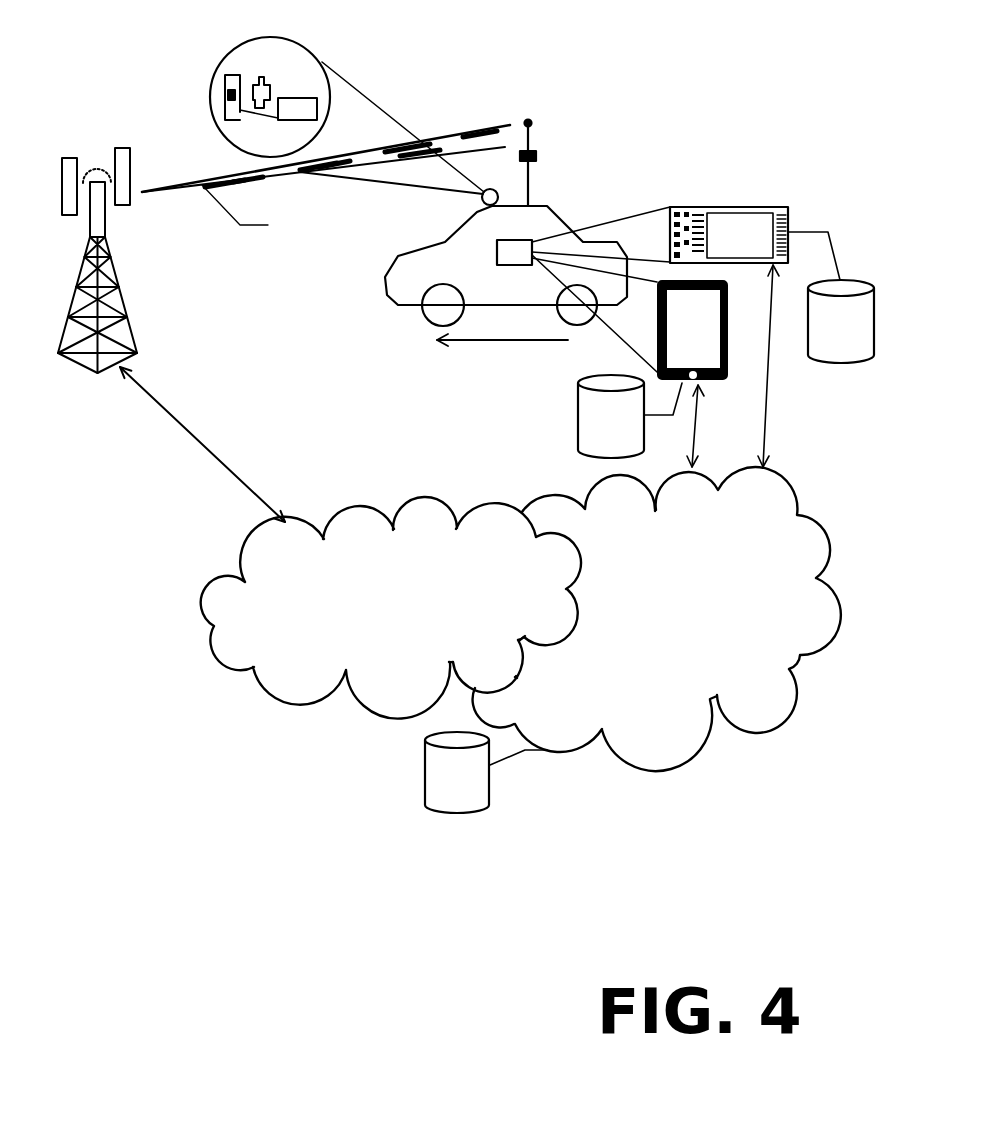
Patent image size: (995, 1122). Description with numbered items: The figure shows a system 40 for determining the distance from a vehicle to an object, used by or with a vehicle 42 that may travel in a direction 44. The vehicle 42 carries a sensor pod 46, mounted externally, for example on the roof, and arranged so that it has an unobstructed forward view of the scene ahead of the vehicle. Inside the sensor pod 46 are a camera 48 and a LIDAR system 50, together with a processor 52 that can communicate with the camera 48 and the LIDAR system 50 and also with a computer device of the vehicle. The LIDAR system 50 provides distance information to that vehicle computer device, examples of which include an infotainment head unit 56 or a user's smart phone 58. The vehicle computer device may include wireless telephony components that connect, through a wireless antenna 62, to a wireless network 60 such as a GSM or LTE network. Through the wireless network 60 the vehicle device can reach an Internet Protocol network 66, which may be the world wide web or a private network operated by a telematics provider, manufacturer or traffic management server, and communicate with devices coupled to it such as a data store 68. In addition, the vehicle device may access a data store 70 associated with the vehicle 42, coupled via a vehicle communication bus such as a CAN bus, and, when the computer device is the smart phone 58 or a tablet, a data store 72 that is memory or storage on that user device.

The system 40 is at (822, 918).
The vehicle 42 is at (469, 224).
The direction 44 is at (501, 368).
The sensor pod 46 is at (222, 134).
The camera 48 is at (261, 84).
The LIDAR system 50 is at (251, 112).
The processor 52 is at (289, 98).
The infotainment head unit 56 is at (729, 211).
The smart phone 58 is at (728, 325).
The wireless network 60 is at (391, 575).
The wireless antenna 62 is at (122, 260).
The IP network 66 is at (657, 634).
The data store 68 is at (468, 808).
The data store 70 is at (841, 358).
The data store 72 is at (574, 416).